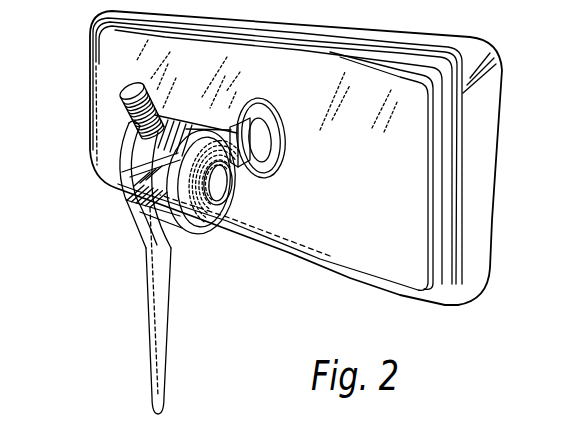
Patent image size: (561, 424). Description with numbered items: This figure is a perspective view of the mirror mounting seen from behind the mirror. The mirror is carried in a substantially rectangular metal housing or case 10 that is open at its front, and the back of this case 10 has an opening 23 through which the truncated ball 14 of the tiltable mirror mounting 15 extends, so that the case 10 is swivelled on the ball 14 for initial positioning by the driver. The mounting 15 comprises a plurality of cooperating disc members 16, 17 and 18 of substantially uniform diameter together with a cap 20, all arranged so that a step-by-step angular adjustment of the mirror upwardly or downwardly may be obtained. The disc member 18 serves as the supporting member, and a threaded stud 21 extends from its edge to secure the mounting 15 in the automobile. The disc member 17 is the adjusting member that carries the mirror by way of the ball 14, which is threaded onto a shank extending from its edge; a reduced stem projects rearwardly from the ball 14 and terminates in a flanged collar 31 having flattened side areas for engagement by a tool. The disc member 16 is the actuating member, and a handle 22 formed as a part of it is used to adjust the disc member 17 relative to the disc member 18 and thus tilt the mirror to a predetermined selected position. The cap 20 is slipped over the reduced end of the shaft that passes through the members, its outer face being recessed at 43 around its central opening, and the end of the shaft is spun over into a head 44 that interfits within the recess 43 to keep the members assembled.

The housing or case 10 is at (100, 103).
The truncated ball 14 is at (257, 128).
The tiltable mirror mounting 15 is at (117, 190).
The disc member 16 is at (123, 162).
The disc member 17 is at (139, 195).
The disc member 18 is at (153, 205).
The cap 20 is at (208, 222).
The threaded stud 21 is at (126, 112).
The handle 22 is at (160, 298).
The opening 23 is at (268, 127).
The flanged collar 31 is at (234, 127).
The recess 43 is at (220, 198).
The head 44 is at (218, 189).